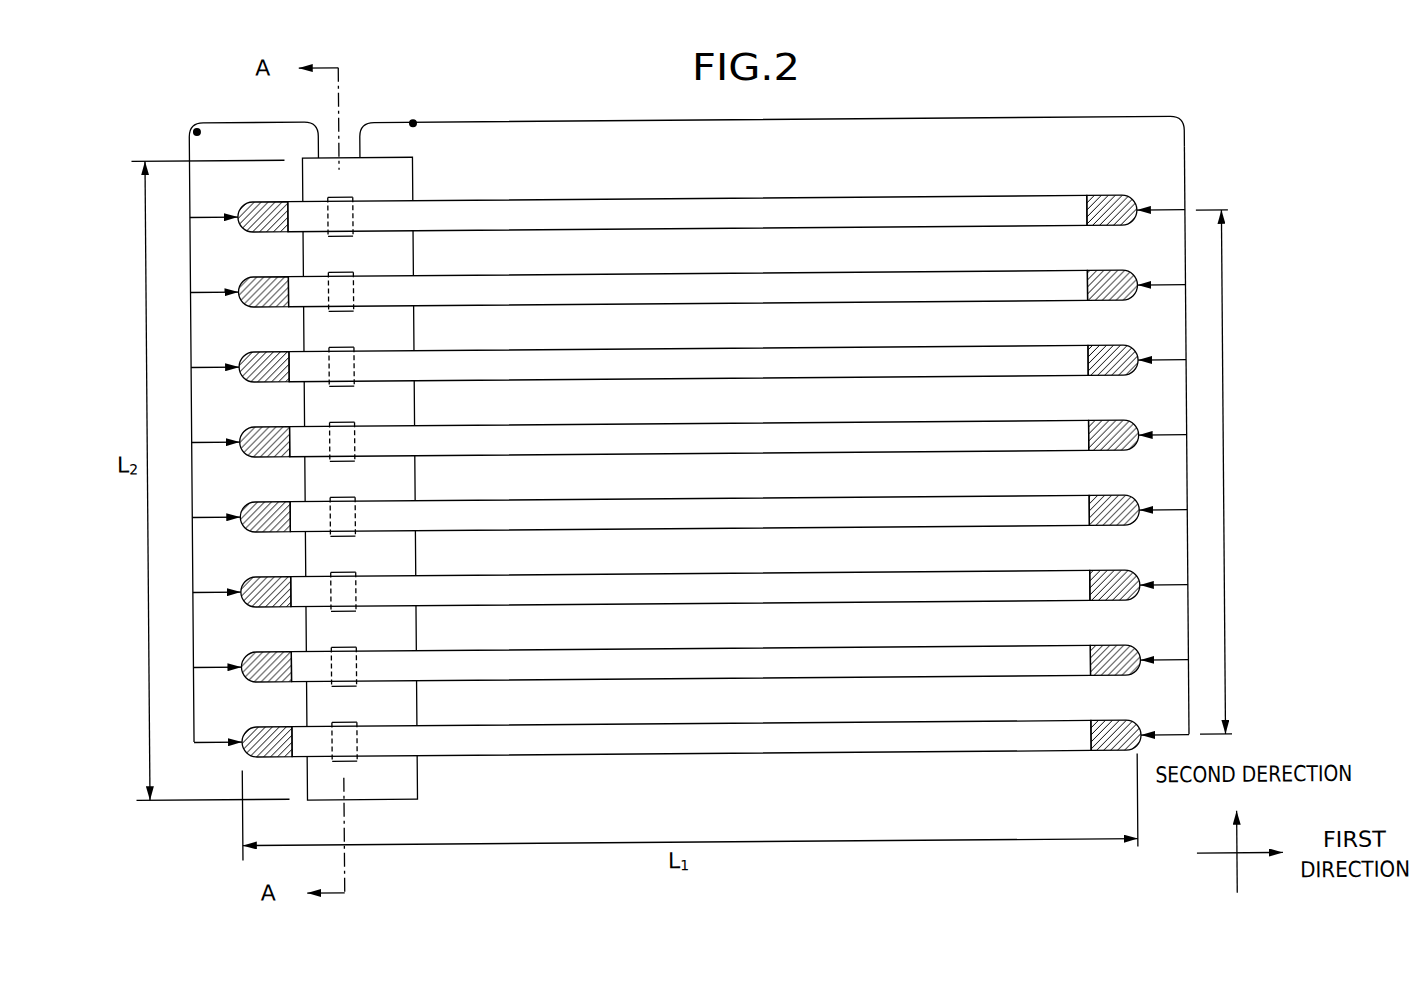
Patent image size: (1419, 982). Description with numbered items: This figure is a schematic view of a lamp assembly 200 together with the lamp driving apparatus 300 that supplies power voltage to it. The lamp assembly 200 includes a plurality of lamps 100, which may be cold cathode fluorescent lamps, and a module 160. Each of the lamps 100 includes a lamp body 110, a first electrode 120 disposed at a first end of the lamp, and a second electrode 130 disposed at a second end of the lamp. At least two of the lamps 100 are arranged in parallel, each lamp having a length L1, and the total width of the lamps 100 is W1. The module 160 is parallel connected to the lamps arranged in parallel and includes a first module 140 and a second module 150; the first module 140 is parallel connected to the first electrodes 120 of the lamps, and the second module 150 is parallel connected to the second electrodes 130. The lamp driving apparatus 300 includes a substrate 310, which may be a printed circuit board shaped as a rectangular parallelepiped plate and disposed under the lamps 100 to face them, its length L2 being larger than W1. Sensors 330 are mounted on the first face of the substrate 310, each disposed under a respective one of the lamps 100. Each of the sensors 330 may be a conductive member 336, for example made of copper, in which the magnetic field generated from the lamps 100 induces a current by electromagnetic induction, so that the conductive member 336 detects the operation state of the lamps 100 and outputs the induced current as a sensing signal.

The lamp 100 is at (688, 420).
The lamp body 110 is at (686, 209).
The first electrode 120 is at (260, 197).
The second electrode 130 is at (1122, 198).
The first module 140 is at (192, 174).
The second module 150 is at (1188, 178).
The module 160 is at (1063, 112).
The lamp assembly 200 is at (1213, 457).
The lamp driving apparatus 300 is at (414, 483).
The substrate 310 is at (407, 183).
The sensor 330 is at (337, 479).
The conductive member 336 is at (341, 684).